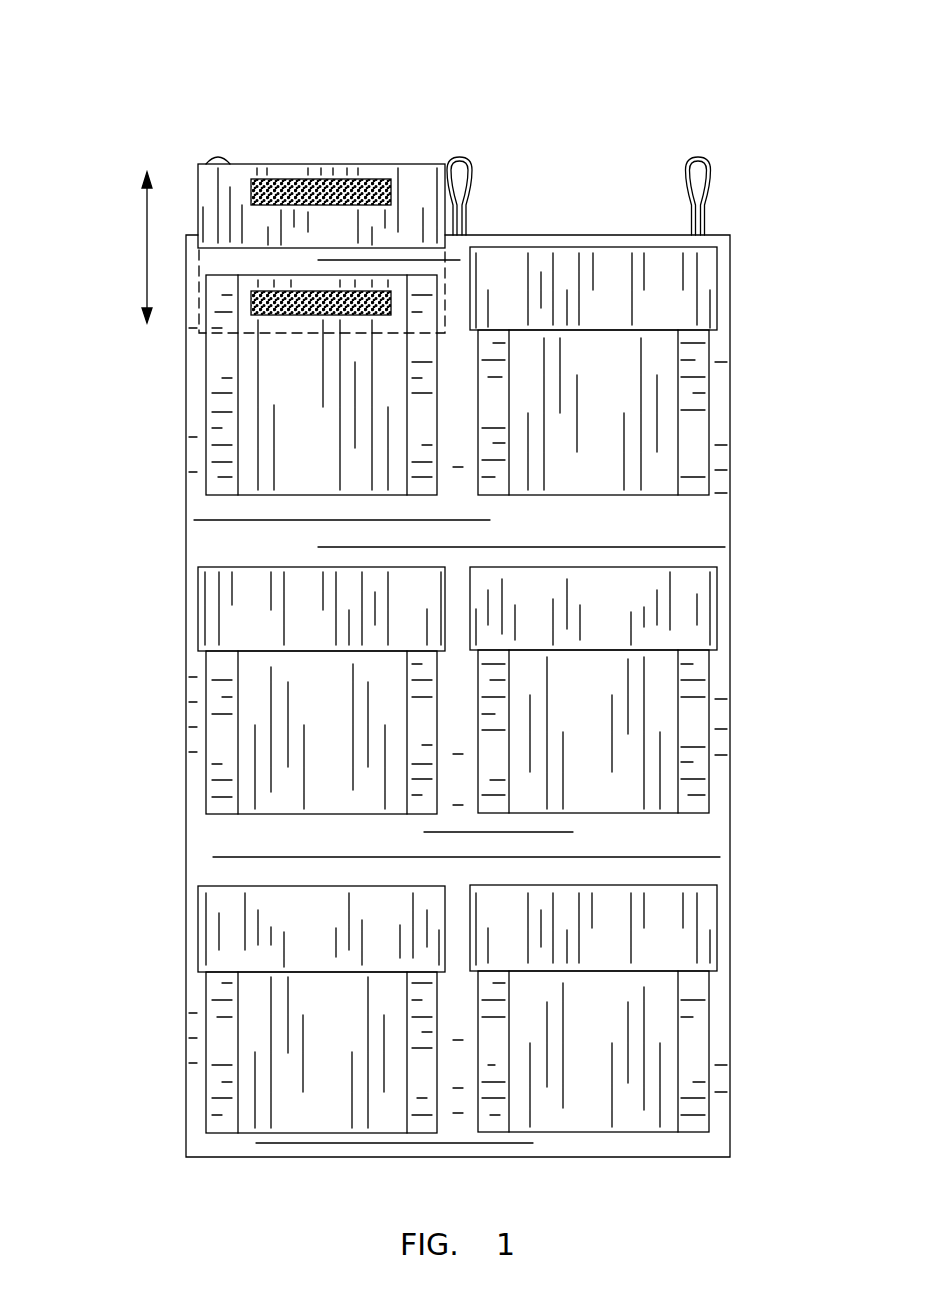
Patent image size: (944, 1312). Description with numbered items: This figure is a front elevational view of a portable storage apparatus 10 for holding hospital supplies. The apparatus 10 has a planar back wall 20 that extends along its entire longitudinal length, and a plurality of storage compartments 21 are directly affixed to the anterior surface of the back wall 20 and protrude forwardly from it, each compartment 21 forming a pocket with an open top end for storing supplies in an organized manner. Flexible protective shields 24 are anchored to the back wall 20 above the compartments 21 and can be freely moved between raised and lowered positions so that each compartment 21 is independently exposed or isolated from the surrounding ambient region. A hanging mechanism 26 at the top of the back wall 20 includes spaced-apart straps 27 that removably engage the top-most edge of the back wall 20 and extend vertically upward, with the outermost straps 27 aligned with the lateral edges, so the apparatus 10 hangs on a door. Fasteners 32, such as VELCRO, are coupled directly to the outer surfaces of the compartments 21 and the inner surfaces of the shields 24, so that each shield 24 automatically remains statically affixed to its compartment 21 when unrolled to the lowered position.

The portable storage apparatus 10 is at (112, 104).
The planar back wall 20 is at (732, 242).
The storage compartments 21 is at (272, 398).
The flexible protective shields 24 is at (237, 182).
The hanging mechanism 26 is at (679, 158).
The straps 27 is at (220, 156).
The fasteners 32 is at (378, 185).